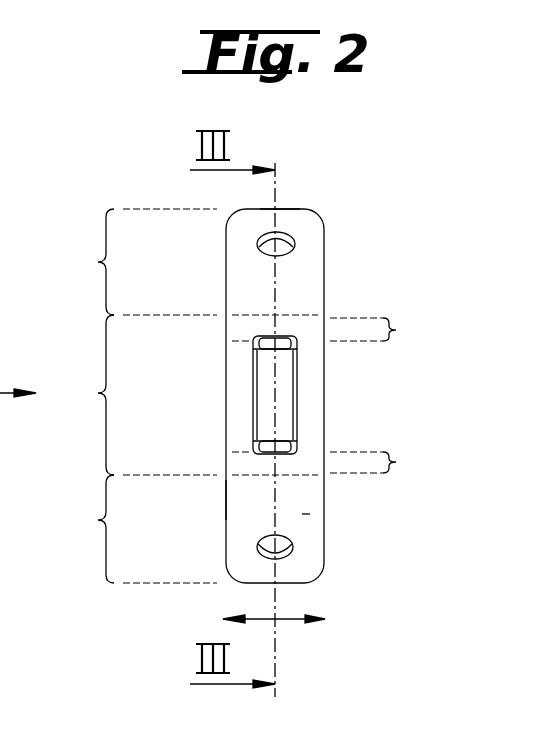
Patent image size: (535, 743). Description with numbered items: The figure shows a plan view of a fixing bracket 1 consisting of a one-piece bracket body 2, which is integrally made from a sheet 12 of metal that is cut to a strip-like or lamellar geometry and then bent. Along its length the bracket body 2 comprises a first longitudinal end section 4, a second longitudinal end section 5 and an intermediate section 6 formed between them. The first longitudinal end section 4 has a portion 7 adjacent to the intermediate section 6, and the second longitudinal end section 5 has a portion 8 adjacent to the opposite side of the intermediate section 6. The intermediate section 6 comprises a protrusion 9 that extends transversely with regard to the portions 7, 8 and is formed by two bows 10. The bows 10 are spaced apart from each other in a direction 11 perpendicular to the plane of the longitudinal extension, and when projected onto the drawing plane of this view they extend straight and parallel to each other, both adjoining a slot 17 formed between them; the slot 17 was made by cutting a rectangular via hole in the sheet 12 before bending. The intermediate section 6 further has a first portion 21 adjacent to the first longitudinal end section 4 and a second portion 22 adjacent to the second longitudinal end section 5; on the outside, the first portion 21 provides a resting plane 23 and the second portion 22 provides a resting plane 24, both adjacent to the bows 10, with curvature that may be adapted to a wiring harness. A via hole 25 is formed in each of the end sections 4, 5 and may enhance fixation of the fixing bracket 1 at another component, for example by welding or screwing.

The fixing bracket 1 is at (322, 336).
The bracket body 2 is at (290, 181).
The first longitudinal end section 4 is at (138, 262).
The second longitudinal end section 5 is at (138, 529).
The intermediate section 6 is at (137, 395).
The portion 7 is at (248, 297).
The portion 8 is at (216, 514).
The protrusion 9 is at (275, 395).
The bows 10 is at (277, 395).
The direction 11 is at (284, 651).
The sheet 12 is at (347, 529).
The slot 17 is at (231, 395).
The first portion 21 is at (391, 329).
The second portion 22 is at (391, 464).
The resting plane 23 is at (312, 302).
The resting plane 24 is at (234, 484).
The via hole 25 is at (324, 399).